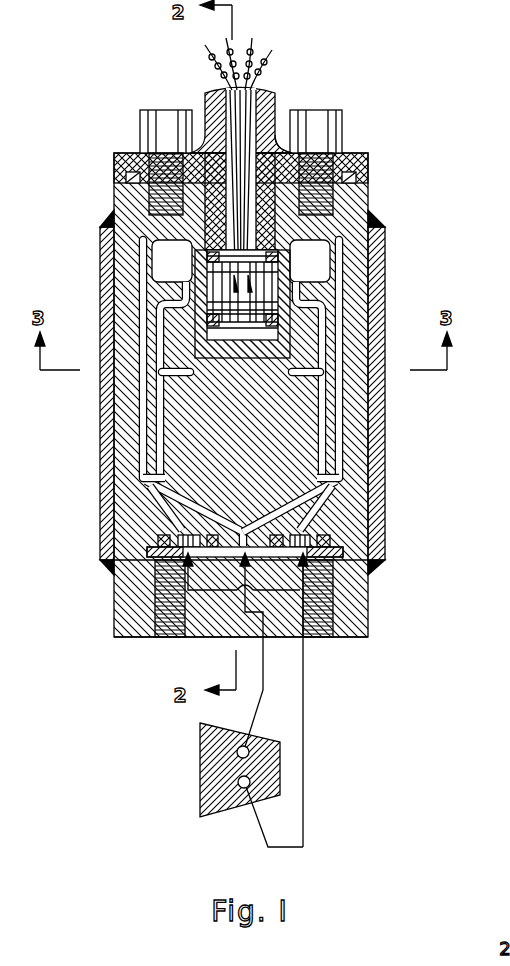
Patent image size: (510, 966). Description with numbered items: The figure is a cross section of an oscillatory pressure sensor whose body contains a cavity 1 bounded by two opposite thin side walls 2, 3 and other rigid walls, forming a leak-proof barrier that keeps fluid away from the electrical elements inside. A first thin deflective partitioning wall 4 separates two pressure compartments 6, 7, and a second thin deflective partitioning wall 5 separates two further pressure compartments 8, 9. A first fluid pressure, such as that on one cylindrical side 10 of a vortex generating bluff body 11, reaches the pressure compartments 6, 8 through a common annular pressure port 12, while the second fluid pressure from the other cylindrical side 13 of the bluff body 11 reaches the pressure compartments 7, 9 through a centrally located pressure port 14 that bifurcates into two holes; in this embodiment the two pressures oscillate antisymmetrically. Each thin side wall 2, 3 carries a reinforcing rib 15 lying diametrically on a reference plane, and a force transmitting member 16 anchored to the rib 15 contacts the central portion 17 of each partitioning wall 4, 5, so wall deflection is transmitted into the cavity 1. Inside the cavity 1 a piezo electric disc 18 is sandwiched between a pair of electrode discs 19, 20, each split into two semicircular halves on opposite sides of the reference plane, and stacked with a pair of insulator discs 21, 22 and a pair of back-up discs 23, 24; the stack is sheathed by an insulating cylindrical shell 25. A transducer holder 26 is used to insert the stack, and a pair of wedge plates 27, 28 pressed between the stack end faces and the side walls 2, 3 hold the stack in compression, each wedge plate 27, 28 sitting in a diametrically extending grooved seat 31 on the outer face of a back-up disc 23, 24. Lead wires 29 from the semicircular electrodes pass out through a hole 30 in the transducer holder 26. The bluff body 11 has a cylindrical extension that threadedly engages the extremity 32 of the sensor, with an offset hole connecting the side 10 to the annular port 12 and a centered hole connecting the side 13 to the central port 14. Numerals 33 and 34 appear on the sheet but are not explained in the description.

The cavity 1 is at (205, 117).
The thin side wall 2 is at (114, 195).
The thin side wall 3 is at (370, 193).
The first thin deflective partitioning wall 4 is at (165, 445).
The second thin deflective partitioning wall 5 is at (355, 490).
The pressure compartment 6 is at (150, 420).
The pressure compartment 7 is at (150, 478).
The pressure compartment 8 is at (340, 455).
The pressure compartment 9 is at (350, 500).
The cylindrical side of bluff body 10 is at (245, 815).
The vortex generating bluff body 11 is at (201, 768).
The common annular pressure port 12 is at (118, 596).
The cylindrical side of bluff body 13 is at (237, 723).
The centrally located pressure port 14 is at (182, 560).
The reinforcing rib 15 is at (165, 290).
The force transmitting member 16 is at (170, 330).
The central portion 17 is at (150, 378).
The piezo electric disc 18 is at (345, 400).
The electrode disc 19 is at (160, 515).
The electrode disc 20 is at (340, 385).
The insulator disc 21 is at (160, 400).
The insulator disc 22 is at (285, 305).
The back-up disc 23 is at (150, 230).
The back-up disc 24 is at (320, 245).
The insulating cylindrical shell 25 is at (345, 420).
The transducer holder 26 is at (290, 128).
The wedge plate 27 is at (153, 138).
The wedge plate 28 is at (338, 137).
The lead wires 29 is at (275, 57).
The hole 30 is at (272, 100).
The grooved seat 31 is at (280, 277).
The extremity 32 is at (320, 637).
The element 33 is at (500, 255).
The element 34 is at (501, 296).